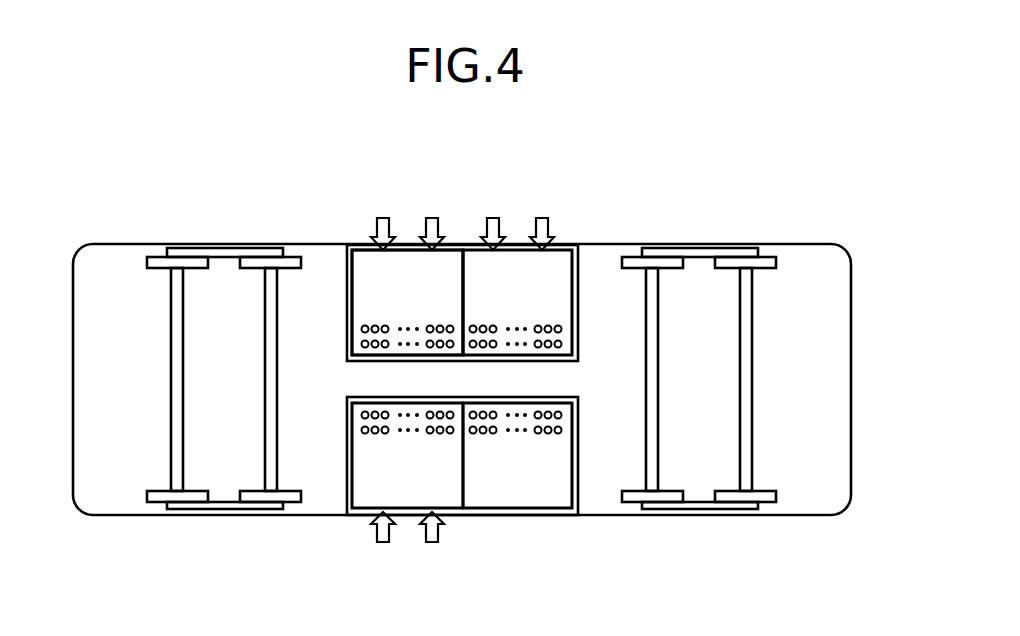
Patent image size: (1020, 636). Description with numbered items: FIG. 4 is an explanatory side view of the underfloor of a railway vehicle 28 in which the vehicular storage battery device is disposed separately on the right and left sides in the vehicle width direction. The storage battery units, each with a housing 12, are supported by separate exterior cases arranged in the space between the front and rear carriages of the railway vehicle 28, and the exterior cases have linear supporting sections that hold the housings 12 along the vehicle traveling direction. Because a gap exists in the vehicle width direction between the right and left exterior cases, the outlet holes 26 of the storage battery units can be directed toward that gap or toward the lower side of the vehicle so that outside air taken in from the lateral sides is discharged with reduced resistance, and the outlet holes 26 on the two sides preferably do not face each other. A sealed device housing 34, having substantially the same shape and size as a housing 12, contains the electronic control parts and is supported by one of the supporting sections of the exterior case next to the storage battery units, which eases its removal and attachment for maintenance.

The railway vehicle 28 is at (118, 268).
The housing 12 is at (407, 302).
The device housing 34 is at (514, 472).
The outlet hole 26 is at (358, 343).